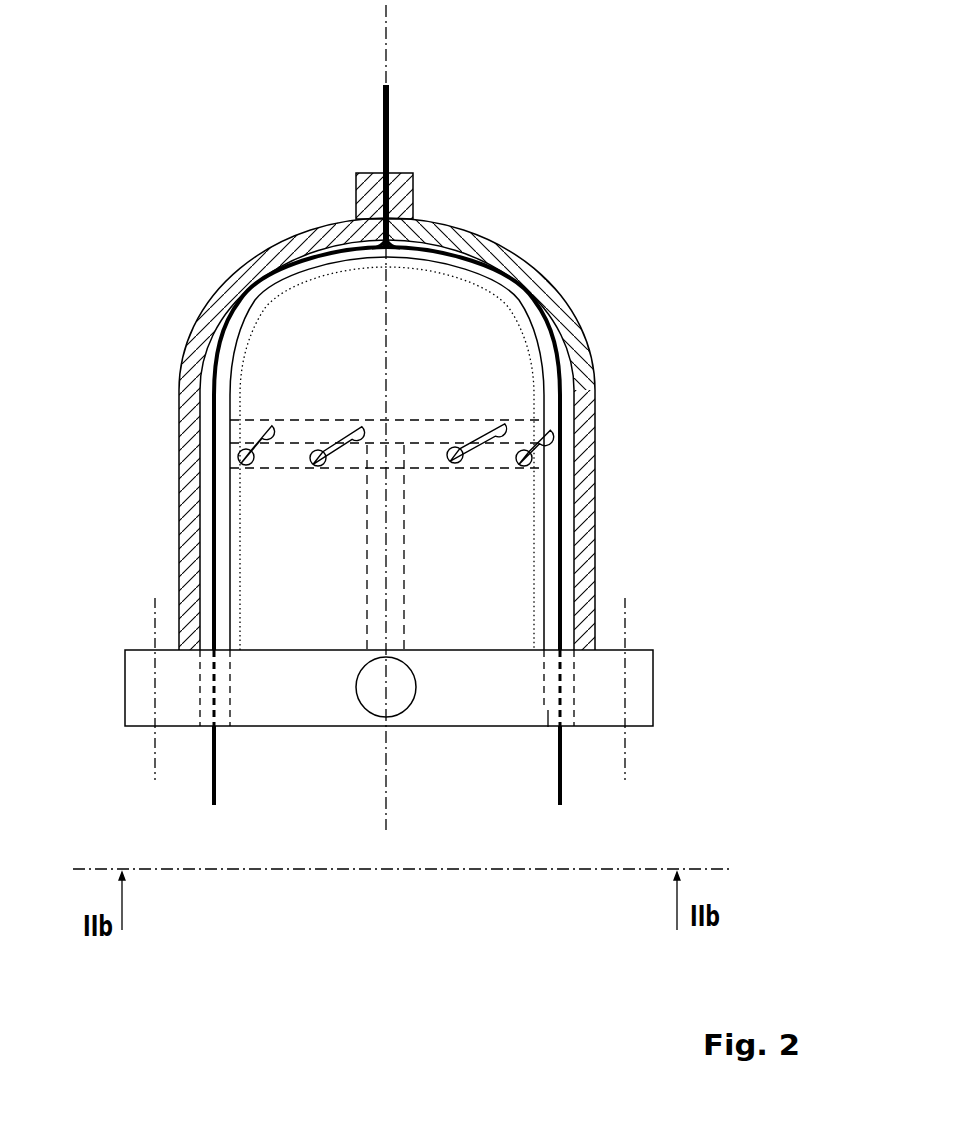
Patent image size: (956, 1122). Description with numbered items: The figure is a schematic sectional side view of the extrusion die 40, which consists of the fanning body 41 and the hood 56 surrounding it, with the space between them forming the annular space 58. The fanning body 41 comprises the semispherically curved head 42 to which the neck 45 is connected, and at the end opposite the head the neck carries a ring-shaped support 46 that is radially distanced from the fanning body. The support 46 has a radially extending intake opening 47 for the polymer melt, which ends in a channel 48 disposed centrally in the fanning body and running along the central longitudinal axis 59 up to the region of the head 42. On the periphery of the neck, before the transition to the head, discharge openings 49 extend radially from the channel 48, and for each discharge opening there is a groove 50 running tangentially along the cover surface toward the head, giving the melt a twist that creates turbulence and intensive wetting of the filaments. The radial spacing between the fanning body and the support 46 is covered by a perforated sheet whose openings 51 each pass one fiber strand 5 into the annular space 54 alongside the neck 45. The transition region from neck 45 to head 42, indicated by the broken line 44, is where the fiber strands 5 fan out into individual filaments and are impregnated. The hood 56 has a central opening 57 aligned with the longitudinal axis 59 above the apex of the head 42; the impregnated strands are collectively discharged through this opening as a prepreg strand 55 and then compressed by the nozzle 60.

The fiber strand 5 is at (278, 283).
The extrusion die 40 is at (513, 244).
The fanning body 41 is at (535, 274).
The head 42 is at (555, 301).
The broken line 44 is at (433, 420).
The neck 45 is at (510, 572).
The support 46 is at (643, 673).
The intake opening 47 is at (397, 703).
The channel 48 is at (402, 613).
The discharge openings 49 is at (316, 470).
The groove 50 is at (323, 421).
The openings 51 is at (226, 725).
The annular space 54 is at (196, 683).
The prepreg strand 55 is at (389, 125).
The hood 56 is at (233, 291).
The central opening 57 is at (396, 232).
The annular space 58 is at (227, 334).
The central longitudinal axis 59 is at (388, 25).
The nozzle 60 is at (355, 190).